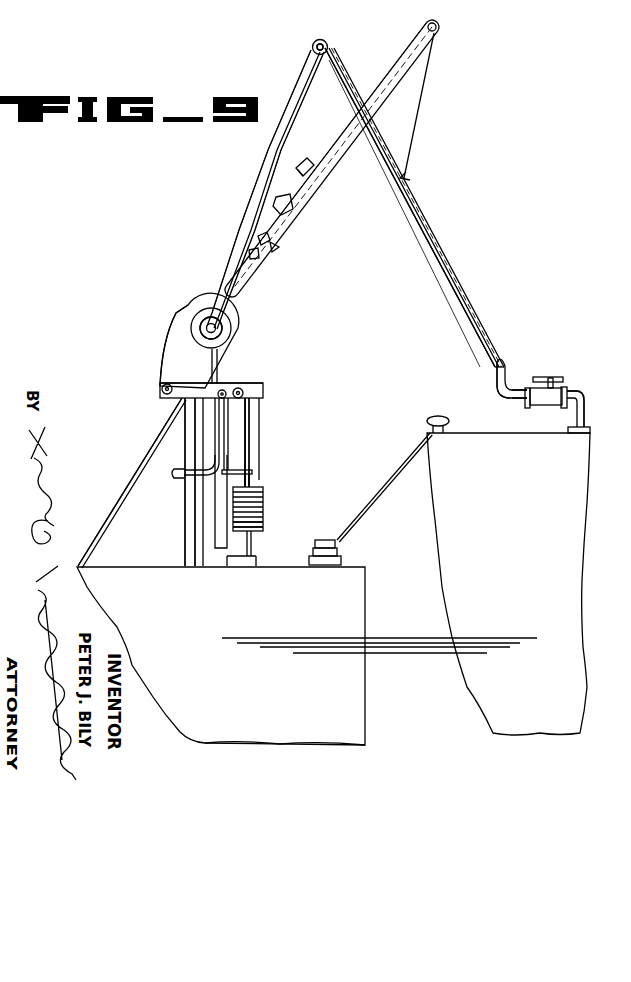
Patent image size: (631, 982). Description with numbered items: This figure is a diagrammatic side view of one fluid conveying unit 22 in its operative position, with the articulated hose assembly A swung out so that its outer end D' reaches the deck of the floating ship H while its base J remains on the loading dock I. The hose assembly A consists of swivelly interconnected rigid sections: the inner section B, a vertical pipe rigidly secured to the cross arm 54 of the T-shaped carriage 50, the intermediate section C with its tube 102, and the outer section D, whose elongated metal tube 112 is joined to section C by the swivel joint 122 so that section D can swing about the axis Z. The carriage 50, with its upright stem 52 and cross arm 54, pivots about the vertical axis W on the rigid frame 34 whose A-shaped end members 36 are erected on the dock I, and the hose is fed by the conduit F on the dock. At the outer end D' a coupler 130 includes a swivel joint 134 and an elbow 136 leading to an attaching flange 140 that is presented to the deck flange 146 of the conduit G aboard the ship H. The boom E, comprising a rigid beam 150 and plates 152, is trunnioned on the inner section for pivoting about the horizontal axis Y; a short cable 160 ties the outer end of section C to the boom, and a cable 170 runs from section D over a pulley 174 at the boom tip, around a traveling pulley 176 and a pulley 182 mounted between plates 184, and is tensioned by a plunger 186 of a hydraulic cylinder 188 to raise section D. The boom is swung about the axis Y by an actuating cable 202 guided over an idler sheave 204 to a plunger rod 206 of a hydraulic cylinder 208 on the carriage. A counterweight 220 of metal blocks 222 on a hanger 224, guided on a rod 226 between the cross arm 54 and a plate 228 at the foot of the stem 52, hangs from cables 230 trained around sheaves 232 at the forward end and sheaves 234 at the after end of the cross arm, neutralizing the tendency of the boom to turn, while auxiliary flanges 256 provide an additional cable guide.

The axis Z is at (311, 43).
The swivel joint 122 is at (312, 49).
The boom E is at (399, 20).
The cable 160 is at (379, 70).
The pulley 174 is at (438, 27).
The cable 170 is at (418, 115).
The central hose section C is at (266, 148).
The pulley 182 is at (300, 168).
The plates 184 is at (312, 164).
The arm member 102 is at (246, 212).
The traveling pulley 176 is at (291, 212).
The rigid beam 150 is at (264, 238).
The plunger 186 is at (273, 247).
The hydraulic cylinder 188 is at (255, 253).
The hose assembly A is at (203, 287).
The unit 22 is at (249, 298).
The outer hose section D is at (414, 207).
The metal tube 112 is at (445, 260).
The auxiliary flanges 256 is at (187, 310).
The horizontal axis Y is at (203, 333).
The plate 152 is at (173, 345).
The cable 230 is at (167, 358).
The sheave 234 is at (165, 385).
The cross arm 54 is at (162, 397).
The rigid frame 34 is at (162, 415).
The vertical axis W is at (222, 424).
The base J is at (148, 455).
The conduit F is at (167, 475).
The end members 36 is at (190, 510).
The hydraulic cylinder 208 is at (220, 518).
The actuating cable 202 is at (215, 365).
The idler sheave 204 is at (226, 388).
The T-shaped carriage 50 is at (272, 387).
The sheave 232 is at (250, 397).
The inner hose section B is at (230, 425).
The rod 226 is at (253, 445).
The plunger rod 206 is at (227, 460).
The stem 52 is at (228, 472).
The hanger 224 is at (248, 480).
The counterweight 220 is at (262, 505).
The metal blocks 222 is at (260, 525).
The plate 228 is at (253, 557).
The swivel joint 134 is at (513, 368).
The coupler 130 is at (522, 366).
The outer end D' is at (475, 378).
The elbow 136 is at (502, 390).
The attaching flange 140 is at (528, 408).
The deck flange 146 is at (538, 412).
The conduit G is at (585, 391).
The ship H is at (522, 533).
The loading dock I is at (262, 618).